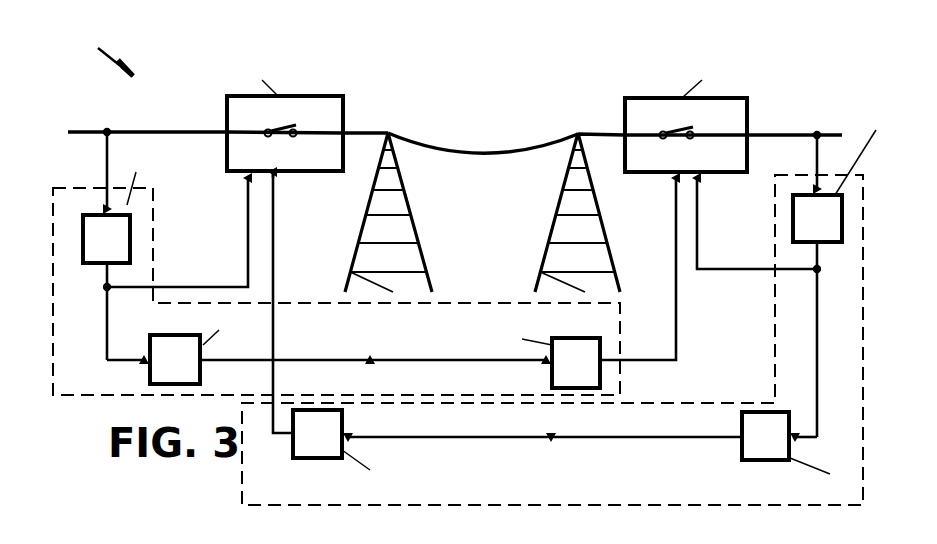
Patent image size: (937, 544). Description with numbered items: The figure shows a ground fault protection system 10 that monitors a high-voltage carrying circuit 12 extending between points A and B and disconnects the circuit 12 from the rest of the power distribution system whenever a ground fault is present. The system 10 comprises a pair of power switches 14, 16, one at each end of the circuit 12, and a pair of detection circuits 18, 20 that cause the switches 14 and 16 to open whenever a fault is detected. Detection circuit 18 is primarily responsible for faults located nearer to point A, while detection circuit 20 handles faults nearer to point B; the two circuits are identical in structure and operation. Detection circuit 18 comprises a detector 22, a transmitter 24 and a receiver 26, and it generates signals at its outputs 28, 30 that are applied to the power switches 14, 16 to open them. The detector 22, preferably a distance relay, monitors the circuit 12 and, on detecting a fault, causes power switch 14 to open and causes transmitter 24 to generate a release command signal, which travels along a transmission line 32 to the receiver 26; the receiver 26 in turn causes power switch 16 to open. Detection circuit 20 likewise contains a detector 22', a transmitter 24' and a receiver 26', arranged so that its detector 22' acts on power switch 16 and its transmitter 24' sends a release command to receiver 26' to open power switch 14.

The ground fault protection system 10 is at (88, 48).
The high-voltage carrying circuit 12 is at (480, 152).
The power switch 14 is at (227, 107).
The power switch 16 is at (722, 172).
The detection circuit 18 is at (50, 277).
The detection circuit 20 is at (862, 330).
The detector 22 is at (138, 196).
The detector 22' is at (797, 175).
The transmitter 24 is at (151, 350).
The transmitter 24' is at (749, 453).
The receiver 26 is at (500, 358).
The receiver 26' is at (498, 334).
The output 28 is at (208, 272).
The output 30 is at (640, 362).
The transmission line 32 is at (316, 348).